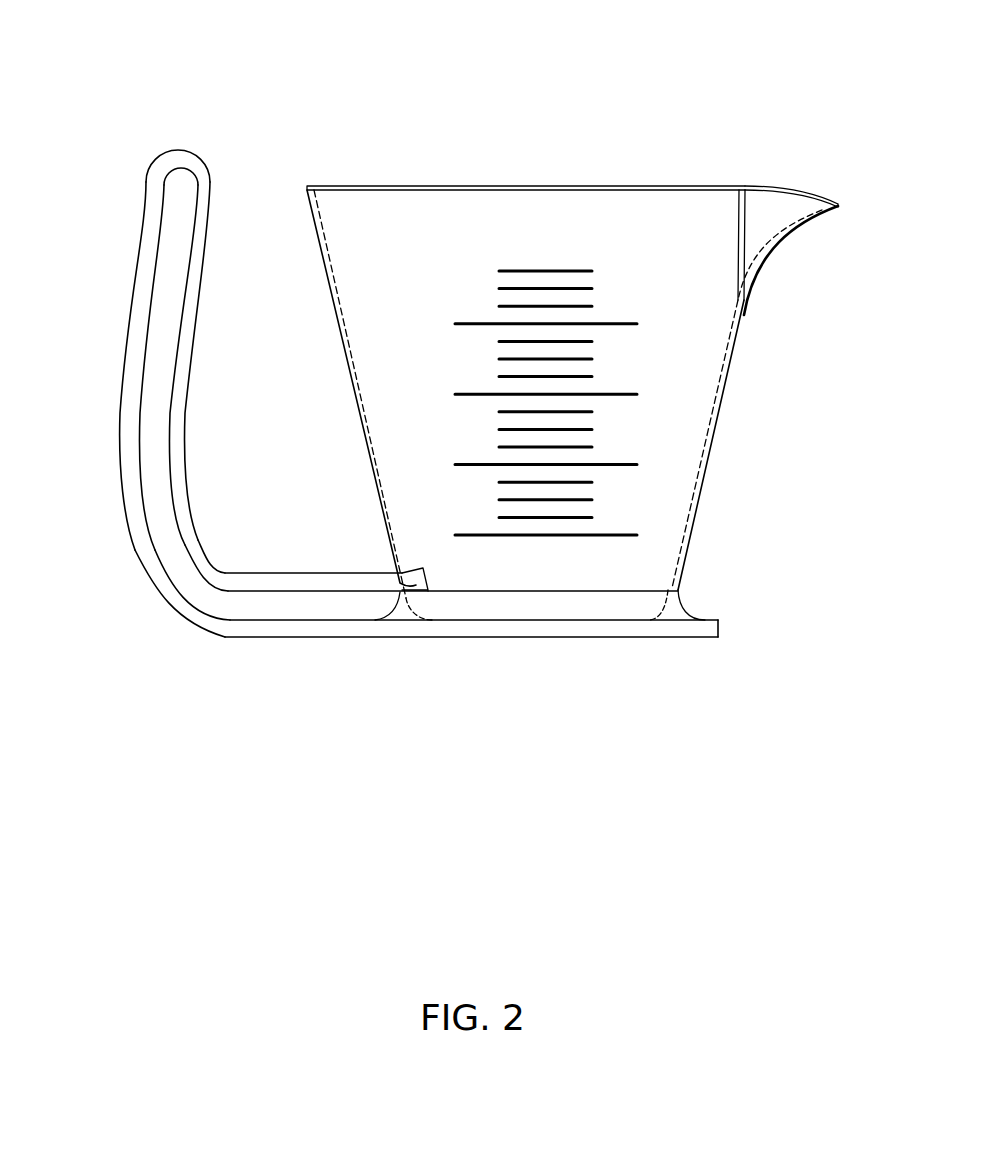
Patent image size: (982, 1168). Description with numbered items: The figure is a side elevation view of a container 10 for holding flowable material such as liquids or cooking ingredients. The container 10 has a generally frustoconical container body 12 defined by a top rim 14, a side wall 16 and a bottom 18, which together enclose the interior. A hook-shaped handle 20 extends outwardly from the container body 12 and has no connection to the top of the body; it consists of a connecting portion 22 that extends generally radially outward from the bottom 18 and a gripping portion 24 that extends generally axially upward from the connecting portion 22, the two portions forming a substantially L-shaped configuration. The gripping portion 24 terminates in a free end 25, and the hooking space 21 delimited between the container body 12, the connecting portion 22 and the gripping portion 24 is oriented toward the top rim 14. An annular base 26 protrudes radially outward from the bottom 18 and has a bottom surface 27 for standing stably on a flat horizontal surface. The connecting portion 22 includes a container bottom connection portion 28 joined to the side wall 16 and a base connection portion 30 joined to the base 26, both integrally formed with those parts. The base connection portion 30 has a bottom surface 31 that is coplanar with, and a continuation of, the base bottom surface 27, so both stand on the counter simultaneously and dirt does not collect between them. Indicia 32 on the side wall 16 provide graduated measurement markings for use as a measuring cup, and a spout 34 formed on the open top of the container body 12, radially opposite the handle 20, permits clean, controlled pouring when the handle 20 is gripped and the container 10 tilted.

The container 10 is at (427, 98).
The container body 12 is at (756, 326).
The top rim 14 is at (660, 185).
The side wall 16 is at (718, 440).
The bottom 18 is at (627, 603).
The handle 20 is at (108, 413).
The hooking space 21 is at (271, 366).
The connecting portion 22 is at (245, 628).
The gripping portion 24 is at (130, 325).
The free end 25 is at (178, 134).
The annular base 26 is at (708, 627).
The bottom surface 27 is at (565, 638).
The container bottom connection portion 28 is at (410, 578).
The base connection portion 30 is at (307, 627).
The bottom surface 31 is at (345, 637).
The indicia 32 is at (600, 326).
The spout 34 is at (780, 207).